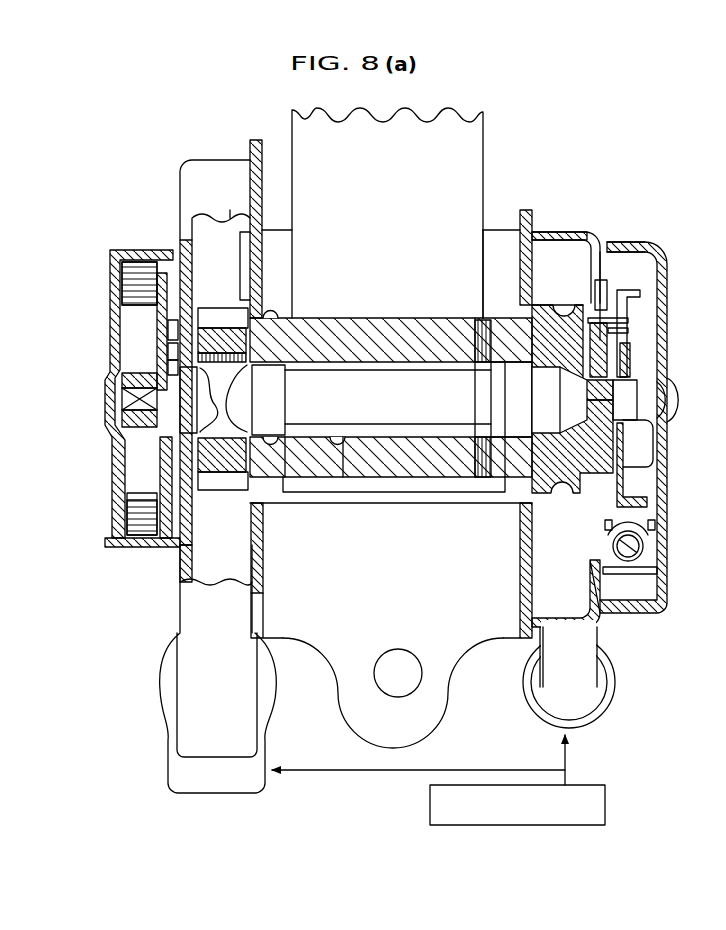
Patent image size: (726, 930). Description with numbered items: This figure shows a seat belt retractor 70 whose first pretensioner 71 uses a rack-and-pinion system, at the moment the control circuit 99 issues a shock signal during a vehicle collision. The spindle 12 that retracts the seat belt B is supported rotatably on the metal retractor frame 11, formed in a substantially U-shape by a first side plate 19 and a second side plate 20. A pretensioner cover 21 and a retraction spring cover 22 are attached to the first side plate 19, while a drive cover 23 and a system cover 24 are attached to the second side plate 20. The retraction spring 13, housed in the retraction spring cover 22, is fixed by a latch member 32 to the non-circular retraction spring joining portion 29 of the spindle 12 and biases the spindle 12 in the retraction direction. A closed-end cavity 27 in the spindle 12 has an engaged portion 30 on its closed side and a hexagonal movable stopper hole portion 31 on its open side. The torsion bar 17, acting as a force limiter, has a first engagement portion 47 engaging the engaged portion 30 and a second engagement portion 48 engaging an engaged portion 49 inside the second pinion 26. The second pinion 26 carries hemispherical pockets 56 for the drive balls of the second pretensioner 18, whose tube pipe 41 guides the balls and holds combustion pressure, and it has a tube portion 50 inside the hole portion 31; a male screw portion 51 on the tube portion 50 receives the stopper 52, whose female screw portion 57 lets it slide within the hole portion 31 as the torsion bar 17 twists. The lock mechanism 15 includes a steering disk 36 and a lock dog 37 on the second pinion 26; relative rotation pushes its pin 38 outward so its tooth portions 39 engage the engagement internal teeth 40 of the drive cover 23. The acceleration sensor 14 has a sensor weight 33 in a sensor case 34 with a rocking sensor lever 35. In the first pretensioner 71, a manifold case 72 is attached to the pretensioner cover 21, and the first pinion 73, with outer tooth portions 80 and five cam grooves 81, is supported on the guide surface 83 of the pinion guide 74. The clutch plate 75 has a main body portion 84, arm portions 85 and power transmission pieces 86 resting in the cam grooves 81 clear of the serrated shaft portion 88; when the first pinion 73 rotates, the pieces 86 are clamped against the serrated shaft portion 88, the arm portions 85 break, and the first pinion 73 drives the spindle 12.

The seat belt retractor 70 is at (636, 107).
The seat belt B is at (484, 128).
The spindle 12 is at (352, 318).
The torsion bar 17 is at (385, 478).
The first engagement portion 47 is at (318, 362).
The closed-end cavity 27 is at (343, 478).
The engaged portion 30 is at (283, 478).
The movable stopper hole portion 31 is at (508, 478).
The stopper 52 is at (480, 345).
The female screw portion 57 is at (470, 350).
The male screw portion 51 is at (483, 318).
The tube portion 50 is at (495, 378).
The engaged portion 49 is at (560, 312).
The second engagement portion 48 is at (566, 480).
The lock mechanism 15 is at (655, 290).
The system cover 24 is at (640, 243).
The second pinion 26 is at (640, 468).
The steering disk 36 is at (632, 322).
The tooth portions 39 is at (640, 300).
The pin 38 is at (630, 334).
The lock dog 37 is at (617, 368).
The engagement internal teeth 40 is at (602, 300).
The second pretensioner 18 is at (592, 258).
The hemispherical pockets 56 is at (545, 262).
The drive cover 23 is at (572, 232).
The sensor lever 35 is at (645, 532).
The acceleration sensor 14 is at (645, 552).
The sensor weight 33 is at (635, 562).
The sensor case 34 is at (622, 578).
The tube pipe 41 is at (595, 690).
The second side plate 20 is at (518, 638).
The first side plate 19 is at (280, 640).
The retractor frame 11 is at (328, 698).
The manifold case 72 is at (180, 738).
The tooth portions 80 is at (190, 586).
The first pinion 73 is at (190, 560).
The cam grooves 81 is at (160, 545).
The retraction spring cover 22 is at (145, 252).
The retraction spring 13 is at (122, 278).
The serrated shaft portion 88 is at (160, 475).
The clutch plate 75 is at (175, 307).
The power transmission pieces 86 is at (178, 322).
The main body portion 84 is at (182, 345).
The arm portions 85 is at (170, 355).
The retraction spring joining portion 29 is at (122, 400).
The latch member 32 is at (110, 415).
The first pretensioner 71 is at (190, 240).
The pretensioner cover 21 is at (210, 175).
The pinion guide 74 is at (235, 210).
The guide surface 83 is at (215, 318).
The control circuit 99 is at (607, 803).